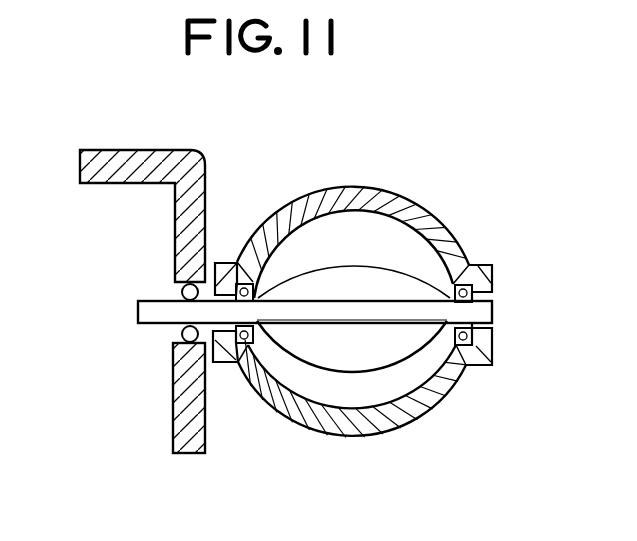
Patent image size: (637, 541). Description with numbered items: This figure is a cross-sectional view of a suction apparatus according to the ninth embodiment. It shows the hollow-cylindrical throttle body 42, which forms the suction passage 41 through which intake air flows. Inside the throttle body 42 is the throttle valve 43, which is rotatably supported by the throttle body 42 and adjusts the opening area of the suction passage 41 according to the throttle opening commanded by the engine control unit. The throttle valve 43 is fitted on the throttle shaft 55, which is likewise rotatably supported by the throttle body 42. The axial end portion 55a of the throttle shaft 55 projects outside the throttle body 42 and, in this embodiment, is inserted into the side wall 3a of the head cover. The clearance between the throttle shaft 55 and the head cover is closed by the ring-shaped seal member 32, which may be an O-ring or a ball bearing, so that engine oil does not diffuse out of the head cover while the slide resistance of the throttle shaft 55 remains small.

The throttle shaft 55 is at (362, 305).
The end portion 55a is at (152, 304).
The seal member 32 is at (182, 334).
The side wall 3a is at (195, 430).
The throttle body 42 is at (430, 233).
The suction passage 41 is at (362, 398).
The throttle valve 43 is at (440, 375).